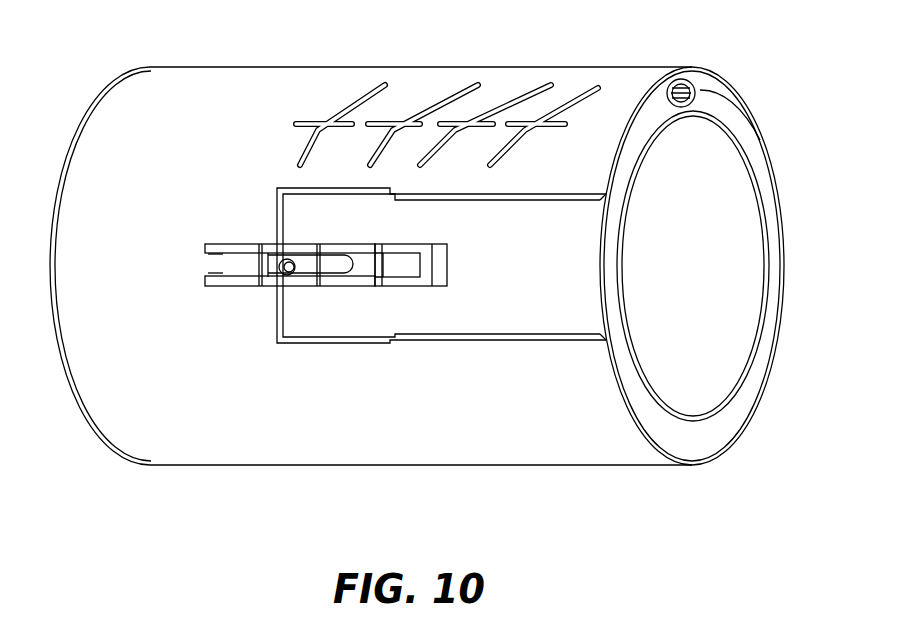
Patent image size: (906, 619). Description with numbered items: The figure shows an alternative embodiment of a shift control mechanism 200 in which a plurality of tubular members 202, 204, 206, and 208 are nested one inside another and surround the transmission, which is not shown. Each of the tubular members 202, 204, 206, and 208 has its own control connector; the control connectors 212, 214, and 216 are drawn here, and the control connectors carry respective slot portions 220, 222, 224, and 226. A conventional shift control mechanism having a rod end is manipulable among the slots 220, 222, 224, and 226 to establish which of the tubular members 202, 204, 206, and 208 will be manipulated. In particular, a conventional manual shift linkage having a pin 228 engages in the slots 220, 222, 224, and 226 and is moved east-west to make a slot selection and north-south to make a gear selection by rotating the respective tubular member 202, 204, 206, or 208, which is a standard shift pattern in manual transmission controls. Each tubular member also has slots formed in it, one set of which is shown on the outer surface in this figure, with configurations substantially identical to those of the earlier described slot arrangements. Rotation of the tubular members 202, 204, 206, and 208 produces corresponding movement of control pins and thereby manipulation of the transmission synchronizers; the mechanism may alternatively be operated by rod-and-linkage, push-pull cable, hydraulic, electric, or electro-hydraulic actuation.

The shift control mechanism 200 is at (758, 92).
The tubular member 202 is at (675, 82).
The tubular member 204 is at (700, 91).
The tubular member 206 is at (750, 124).
The tubular member 208 is at (640, 360).
The control connector 212 is at (345, 248).
The control connector 214 is at (430, 254).
The control connector 216 is at (215, 282).
The slot portion 220 is at (268, 262).
The slot portion 222 is at (367, 270).
The slot portion 224 is at (407, 267).
The slot portion 226 is at (215, 264).
The pin 228 is at (303, 272).